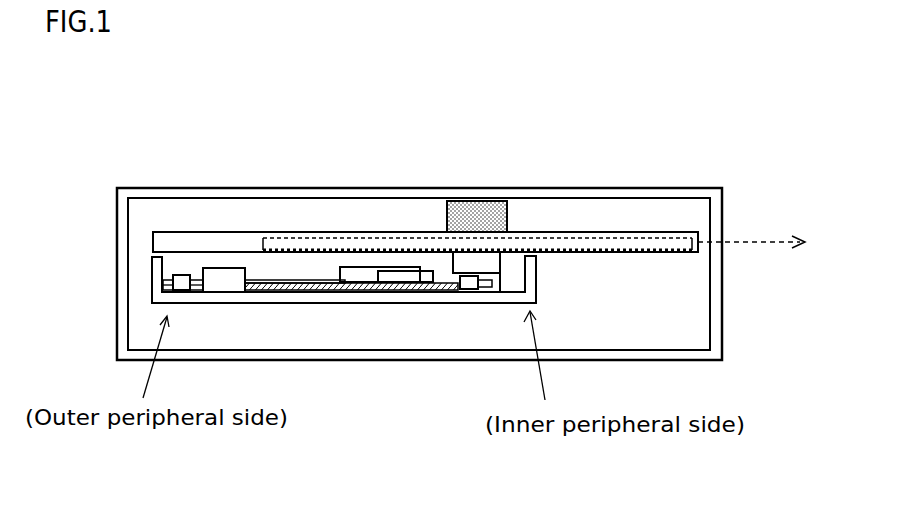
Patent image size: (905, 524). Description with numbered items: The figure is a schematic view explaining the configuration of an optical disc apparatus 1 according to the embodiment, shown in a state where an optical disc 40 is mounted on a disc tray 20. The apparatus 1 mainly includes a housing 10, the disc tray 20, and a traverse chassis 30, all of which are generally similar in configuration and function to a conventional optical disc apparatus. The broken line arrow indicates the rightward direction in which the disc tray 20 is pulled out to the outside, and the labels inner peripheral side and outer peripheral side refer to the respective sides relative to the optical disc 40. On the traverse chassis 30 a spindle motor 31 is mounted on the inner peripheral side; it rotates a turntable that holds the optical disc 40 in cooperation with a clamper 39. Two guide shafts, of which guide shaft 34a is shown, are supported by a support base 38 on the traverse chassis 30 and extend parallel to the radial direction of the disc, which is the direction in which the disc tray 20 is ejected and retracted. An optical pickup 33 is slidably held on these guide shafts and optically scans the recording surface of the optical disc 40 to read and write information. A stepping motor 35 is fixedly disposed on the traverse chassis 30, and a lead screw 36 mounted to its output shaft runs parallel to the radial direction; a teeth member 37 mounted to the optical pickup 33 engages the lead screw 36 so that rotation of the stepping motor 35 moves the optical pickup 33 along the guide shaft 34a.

The optical disc apparatus 1 is at (725, 140).
The housing 10 is at (178, 188).
The disc tray 20 is at (265, 235).
The traverse chassis 30 is at (536, 295).
The spindle motor 31 is at (495, 263).
The optical pickup 33 is at (350, 272).
The guide shaft 34a is at (262, 281).
The stepping motor 35 is at (218, 279).
The lead screw 36 is at (333, 290).
The teeth member 37 is at (412, 277).
The support base 38 is at (168, 276).
The clamper 39 is at (474, 212).
The optical disc 40 is at (545, 240).